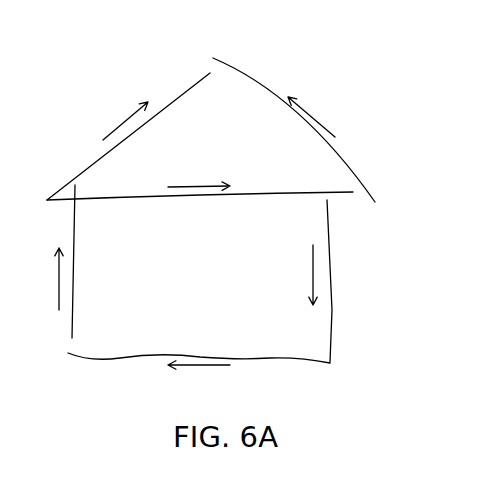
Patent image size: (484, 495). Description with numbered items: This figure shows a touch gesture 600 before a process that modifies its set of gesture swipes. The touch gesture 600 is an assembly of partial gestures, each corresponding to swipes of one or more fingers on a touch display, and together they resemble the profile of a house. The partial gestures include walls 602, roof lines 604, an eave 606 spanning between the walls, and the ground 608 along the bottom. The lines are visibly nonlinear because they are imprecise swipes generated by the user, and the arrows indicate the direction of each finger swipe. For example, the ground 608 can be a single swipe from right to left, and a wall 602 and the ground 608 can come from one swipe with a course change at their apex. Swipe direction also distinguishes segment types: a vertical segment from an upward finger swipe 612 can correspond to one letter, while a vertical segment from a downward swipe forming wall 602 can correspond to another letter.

The touch gesture 600 is at (239, 211).
The wall 602 is at (332, 312).
The roof lines 604 is at (342, 165).
The eave 606 is at (268, 198).
The ground 608 is at (212, 349).
The upward finger swipe 612 is at (72, 312).